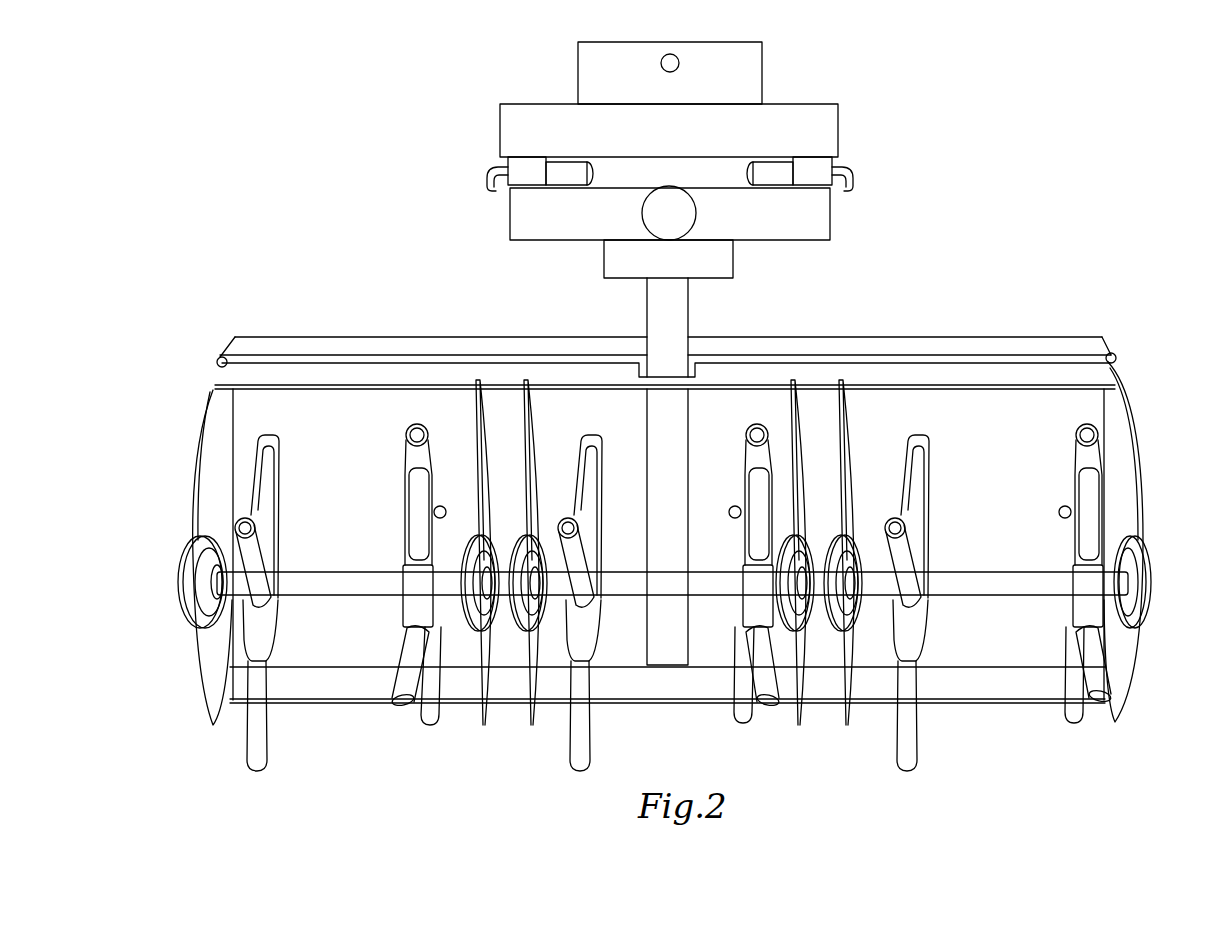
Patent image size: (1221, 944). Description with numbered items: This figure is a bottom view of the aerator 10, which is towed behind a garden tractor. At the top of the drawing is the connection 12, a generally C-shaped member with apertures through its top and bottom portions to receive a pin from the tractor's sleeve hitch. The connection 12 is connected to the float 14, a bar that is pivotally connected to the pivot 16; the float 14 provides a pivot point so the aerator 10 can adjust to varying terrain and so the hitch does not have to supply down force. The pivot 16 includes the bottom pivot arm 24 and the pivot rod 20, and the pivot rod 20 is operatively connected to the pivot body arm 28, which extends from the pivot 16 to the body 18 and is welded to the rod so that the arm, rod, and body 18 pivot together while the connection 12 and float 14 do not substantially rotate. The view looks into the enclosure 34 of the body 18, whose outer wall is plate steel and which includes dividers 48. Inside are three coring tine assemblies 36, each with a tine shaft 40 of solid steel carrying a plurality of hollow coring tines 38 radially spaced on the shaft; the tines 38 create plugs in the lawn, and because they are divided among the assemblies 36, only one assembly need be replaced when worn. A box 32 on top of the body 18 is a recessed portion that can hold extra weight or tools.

The aerator 10 is at (1058, 127).
The connection 12 is at (745, 73).
The float 14 is at (486, 168).
The pivot 16 is at (511, 202).
The body 18 is at (682, 500).
The pivot rod 20 is at (653, 212).
The bottom pivot arm 24 is at (812, 215).
The pivot body arm 28 is at (675, 310).
The box 32 is at (260, 348).
The enclosure 34 is at (1115, 372).
The coring tine assembly 36 is at (672, 622).
The coring tines 38 is at (262, 737).
The tine shaft 40 is at (357, 573).
The dividers 48 is at (857, 407).